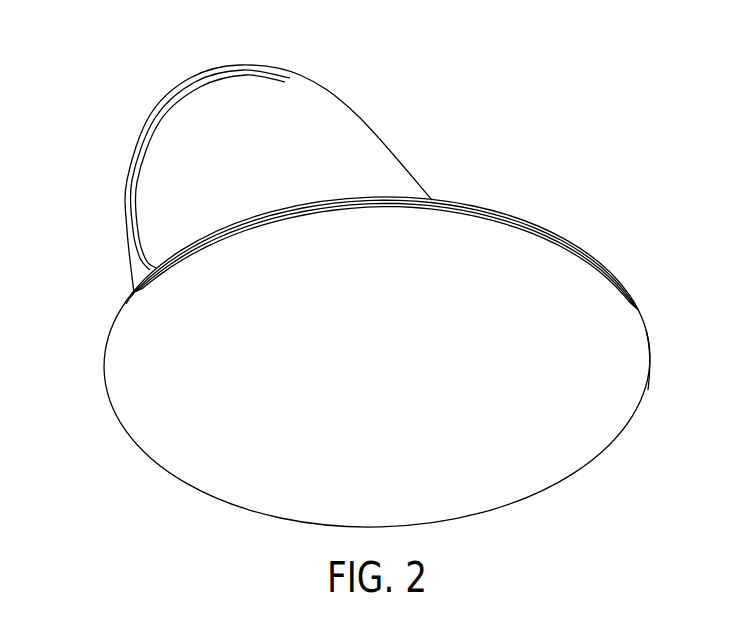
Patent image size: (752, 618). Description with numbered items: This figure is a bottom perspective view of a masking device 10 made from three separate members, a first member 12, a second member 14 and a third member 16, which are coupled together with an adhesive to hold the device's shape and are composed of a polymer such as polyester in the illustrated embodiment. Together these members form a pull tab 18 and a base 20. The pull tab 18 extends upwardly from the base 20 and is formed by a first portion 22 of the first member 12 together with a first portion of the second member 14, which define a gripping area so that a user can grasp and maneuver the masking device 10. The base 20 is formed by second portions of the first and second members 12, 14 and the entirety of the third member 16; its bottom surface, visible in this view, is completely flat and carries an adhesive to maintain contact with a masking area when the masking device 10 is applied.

The masking device 10 is at (370, 293).
The first member 12 is at (446, 195).
The second member 14 is at (89, 271).
The third member 16 is at (575, 503).
The pull tab 18 is at (308, 81).
The base 20 is at (654, 376).
The first portion of the first member 22 is at (340, 118).